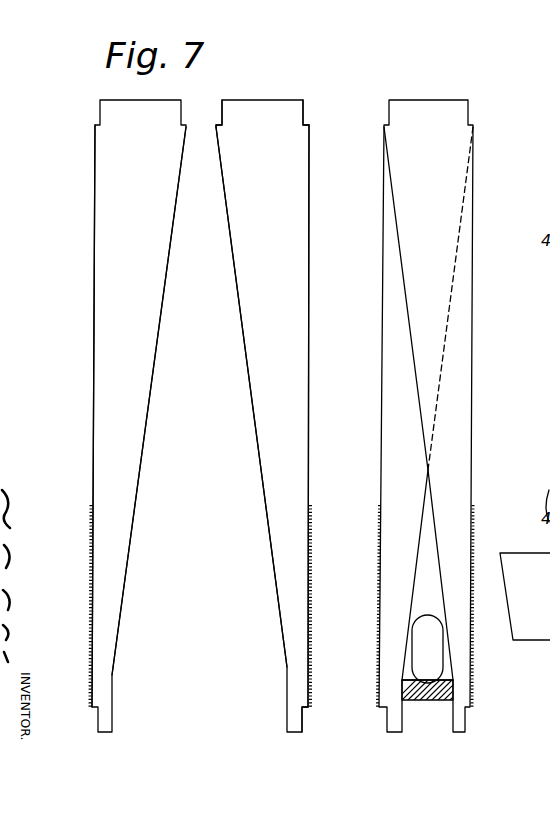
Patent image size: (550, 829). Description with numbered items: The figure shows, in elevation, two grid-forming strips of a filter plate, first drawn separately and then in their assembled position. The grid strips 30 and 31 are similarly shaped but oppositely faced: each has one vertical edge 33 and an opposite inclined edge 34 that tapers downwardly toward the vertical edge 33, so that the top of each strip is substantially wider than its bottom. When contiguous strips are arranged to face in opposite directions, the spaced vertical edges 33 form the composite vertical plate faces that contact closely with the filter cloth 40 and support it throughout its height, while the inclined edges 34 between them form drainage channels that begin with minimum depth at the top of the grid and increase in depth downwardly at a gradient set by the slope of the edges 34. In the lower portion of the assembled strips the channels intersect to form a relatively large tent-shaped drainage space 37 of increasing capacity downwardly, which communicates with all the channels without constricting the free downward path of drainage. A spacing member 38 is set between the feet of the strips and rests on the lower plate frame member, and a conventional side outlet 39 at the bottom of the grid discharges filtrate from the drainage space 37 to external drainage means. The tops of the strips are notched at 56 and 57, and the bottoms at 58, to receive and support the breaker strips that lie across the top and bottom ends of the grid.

The grid strip 30 is at (118, 170).
The grid strip 31 is at (278, 201).
The vertical edge 33 is at (94, 240).
The inclined edge 34 is at (234, 265).
The tent-shaped drainage space 37 is at (430, 586).
The spacing member 38 is at (433, 695).
The side outlet 39 is at (430, 662).
The filter cloth 40 is at (380, 575).
The top notch 56 is at (306, 115).
The top notch 57 is at (217, 112).
The bottom notch 58 is at (302, 717).